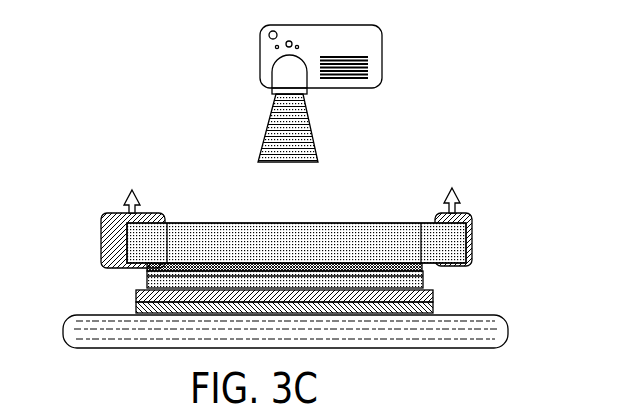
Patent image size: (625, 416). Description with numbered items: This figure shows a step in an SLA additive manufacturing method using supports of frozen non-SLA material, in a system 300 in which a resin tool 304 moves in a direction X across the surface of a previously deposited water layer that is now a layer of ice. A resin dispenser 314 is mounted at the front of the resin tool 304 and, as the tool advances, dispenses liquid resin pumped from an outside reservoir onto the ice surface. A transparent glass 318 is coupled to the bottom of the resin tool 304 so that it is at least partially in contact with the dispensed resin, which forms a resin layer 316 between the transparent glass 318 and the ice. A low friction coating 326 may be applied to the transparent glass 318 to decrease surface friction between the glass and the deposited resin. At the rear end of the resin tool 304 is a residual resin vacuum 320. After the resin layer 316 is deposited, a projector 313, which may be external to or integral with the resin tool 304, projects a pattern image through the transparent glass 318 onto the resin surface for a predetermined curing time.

The system 300 is at (74, 109).
The projector 313 is at (382, 57).
The resin tool 304 is at (353, 224).
The resin dispenser 314 is at (463, 215).
The residual resin vacuum 320 is at (101, 243).
The resin layer 316 is at (147, 275).
The transparent glass 318 is at (428, 268).
The low friction coating 326 is at (428, 275).